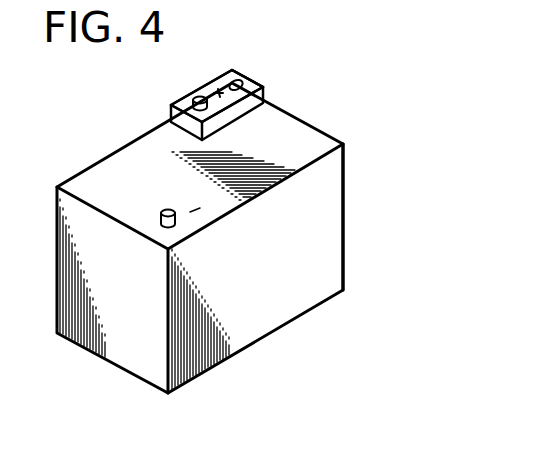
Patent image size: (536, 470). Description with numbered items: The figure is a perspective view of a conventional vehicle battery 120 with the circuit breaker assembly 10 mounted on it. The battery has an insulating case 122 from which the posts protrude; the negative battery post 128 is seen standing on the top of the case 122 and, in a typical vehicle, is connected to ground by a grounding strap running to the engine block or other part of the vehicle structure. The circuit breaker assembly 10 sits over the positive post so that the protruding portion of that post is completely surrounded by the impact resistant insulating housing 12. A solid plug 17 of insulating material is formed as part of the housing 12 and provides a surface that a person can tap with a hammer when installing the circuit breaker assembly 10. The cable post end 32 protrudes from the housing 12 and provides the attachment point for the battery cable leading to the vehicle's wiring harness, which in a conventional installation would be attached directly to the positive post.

The circuit breaker assembly 10 is at (268, 60).
The housing 12 is at (263, 98).
The plug 17 is at (257, 82).
The cable post end 32 is at (186, 108).
The battery 120 is at (352, 126).
The insulating case 122 is at (343, 233).
The negative battery post 128 is at (159, 221).